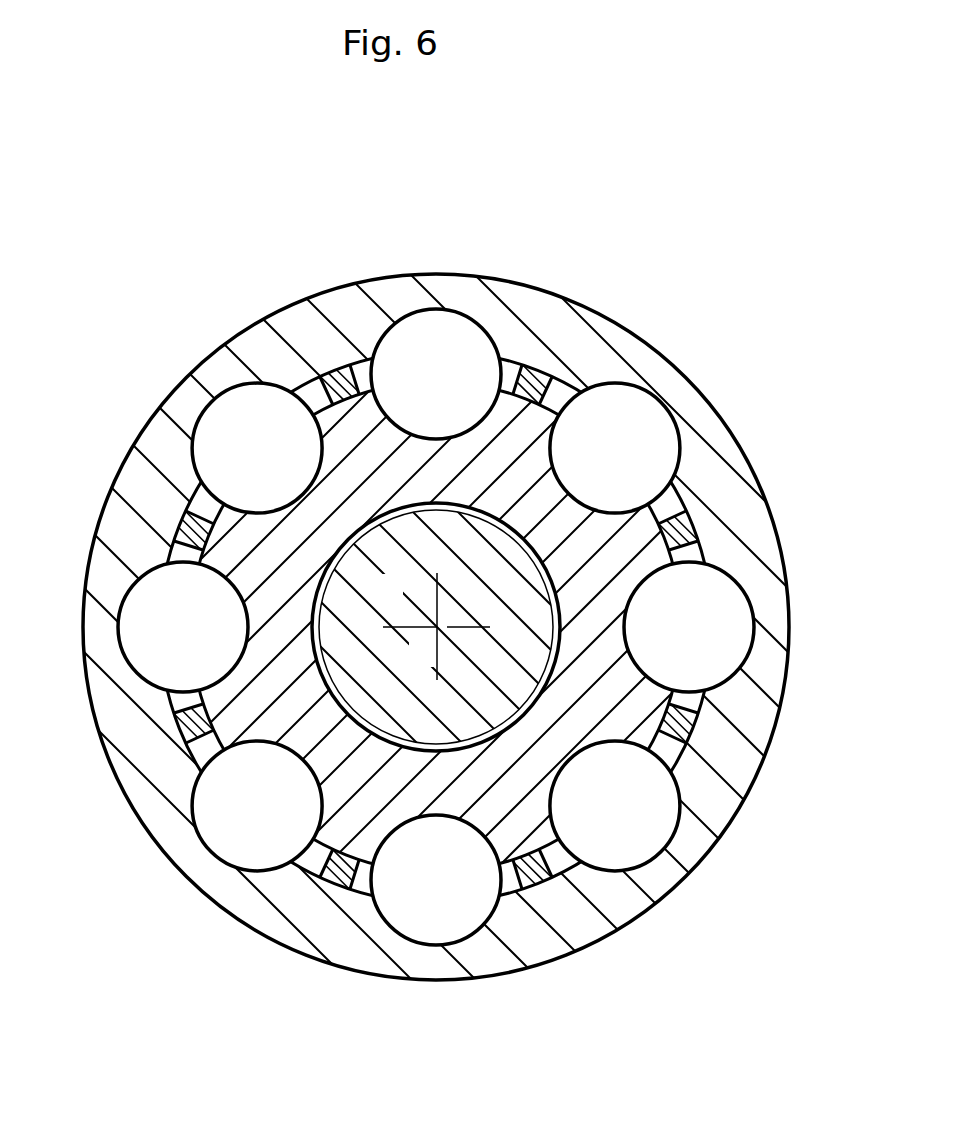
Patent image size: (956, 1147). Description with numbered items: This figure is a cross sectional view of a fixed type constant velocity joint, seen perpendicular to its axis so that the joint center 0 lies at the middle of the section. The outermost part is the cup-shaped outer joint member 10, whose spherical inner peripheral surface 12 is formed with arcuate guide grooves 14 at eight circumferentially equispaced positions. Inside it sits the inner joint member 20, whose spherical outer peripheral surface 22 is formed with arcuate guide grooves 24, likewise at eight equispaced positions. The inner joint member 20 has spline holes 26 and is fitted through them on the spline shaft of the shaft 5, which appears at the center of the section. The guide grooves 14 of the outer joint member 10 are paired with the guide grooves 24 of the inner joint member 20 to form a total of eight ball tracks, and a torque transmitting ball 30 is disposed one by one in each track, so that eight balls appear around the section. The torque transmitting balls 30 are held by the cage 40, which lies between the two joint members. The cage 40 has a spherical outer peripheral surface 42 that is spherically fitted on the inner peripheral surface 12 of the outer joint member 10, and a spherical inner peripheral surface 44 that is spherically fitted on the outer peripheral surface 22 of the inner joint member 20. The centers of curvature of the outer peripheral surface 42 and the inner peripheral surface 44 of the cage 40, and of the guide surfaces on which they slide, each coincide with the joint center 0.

The outer joint member 10 is at (235, 322).
The inner peripheral surface 12 is at (287, 392).
The guide grooves 14 is at (192, 453).
The inner joint member 20 is at (560, 439).
The outer peripheral surface 22 is at (655, 520).
The guide grooves 24 is at (580, 502).
The spline holes 26 is at (436, 627).
The torque transmitting balls 30 is at (365, 331).
The cage 40 is at (164, 738).
The outer peripheral surface 42 is at (210, 757).
The inner peripheral surface 44 is at (255, 688).
The shaft 5 is at (381, 607).
The joint center 0 is at (436, 626).